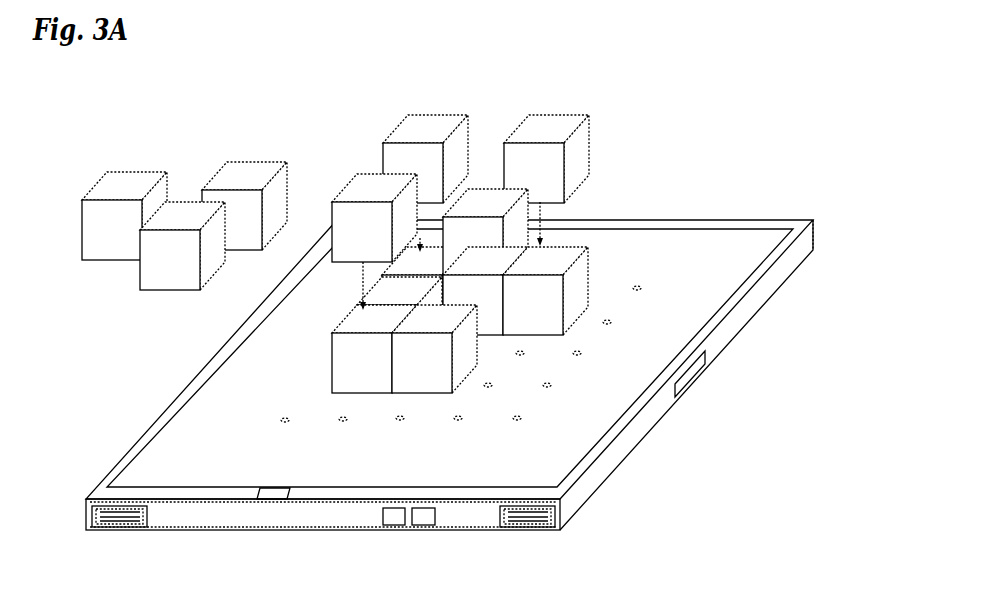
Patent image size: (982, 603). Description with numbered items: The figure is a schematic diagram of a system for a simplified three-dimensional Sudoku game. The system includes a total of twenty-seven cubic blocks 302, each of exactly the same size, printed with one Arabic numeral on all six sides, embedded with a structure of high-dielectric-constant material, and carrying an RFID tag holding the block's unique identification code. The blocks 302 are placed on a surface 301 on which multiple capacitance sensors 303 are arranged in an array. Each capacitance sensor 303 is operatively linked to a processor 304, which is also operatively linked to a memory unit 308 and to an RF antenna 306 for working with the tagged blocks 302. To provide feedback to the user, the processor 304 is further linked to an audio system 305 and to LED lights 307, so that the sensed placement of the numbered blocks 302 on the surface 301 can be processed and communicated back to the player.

The surface 301 is at (798, 217).
The cubic blocks 302 is at (527, 133).
The capacitance sensors 303 is at (462, 420).
The processor 304 is at (390, 520).
The audio system 305 is at (110, 518).
The RF antenna 306 is at (702, 365).
The LED lights 307 is at (272, 493).
The memory unit 308 is at (427, 518).